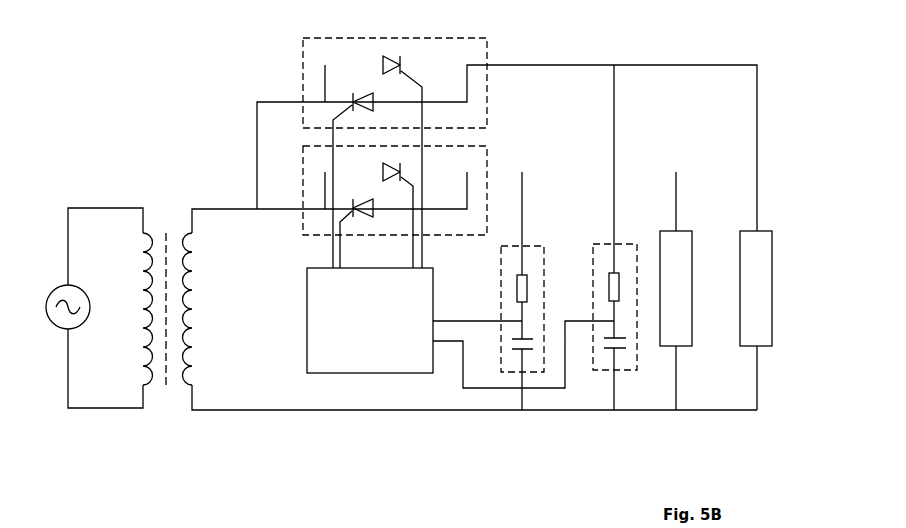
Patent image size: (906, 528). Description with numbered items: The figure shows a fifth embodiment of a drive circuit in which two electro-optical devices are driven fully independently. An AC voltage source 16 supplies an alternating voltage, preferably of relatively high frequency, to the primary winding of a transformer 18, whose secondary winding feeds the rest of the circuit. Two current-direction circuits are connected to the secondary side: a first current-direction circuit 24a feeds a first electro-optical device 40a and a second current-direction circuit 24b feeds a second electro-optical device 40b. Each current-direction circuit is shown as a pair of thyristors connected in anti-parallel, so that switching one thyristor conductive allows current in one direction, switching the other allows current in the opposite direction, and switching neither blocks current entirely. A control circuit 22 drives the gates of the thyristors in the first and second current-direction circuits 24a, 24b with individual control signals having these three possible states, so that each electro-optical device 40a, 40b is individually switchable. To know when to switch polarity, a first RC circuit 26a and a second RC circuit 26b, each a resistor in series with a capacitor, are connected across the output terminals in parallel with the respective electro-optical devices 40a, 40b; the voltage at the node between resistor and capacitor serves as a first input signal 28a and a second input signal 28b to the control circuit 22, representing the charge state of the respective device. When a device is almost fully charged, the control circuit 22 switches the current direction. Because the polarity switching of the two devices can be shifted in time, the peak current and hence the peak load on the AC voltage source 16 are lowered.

The AC voltage source 16 is at (53, 330).
The transformer 18 is at (163, 400).
The control circuit 22 is at (375, 333).
The first current-direction circuit 24a is at (488, 152).
The second current-direction circuit 24b is at (488, 43).
The first RC circuit 26a is at (540, 367).
The second RC circuit 26b is at (618, 366).
The first input signal 28a is at (480, 320).
The second input signal 28b is at (443, 338).
The first electro-optical device 40a is at (670, 270).
The second electro-optical device 40b is at (753, 285).